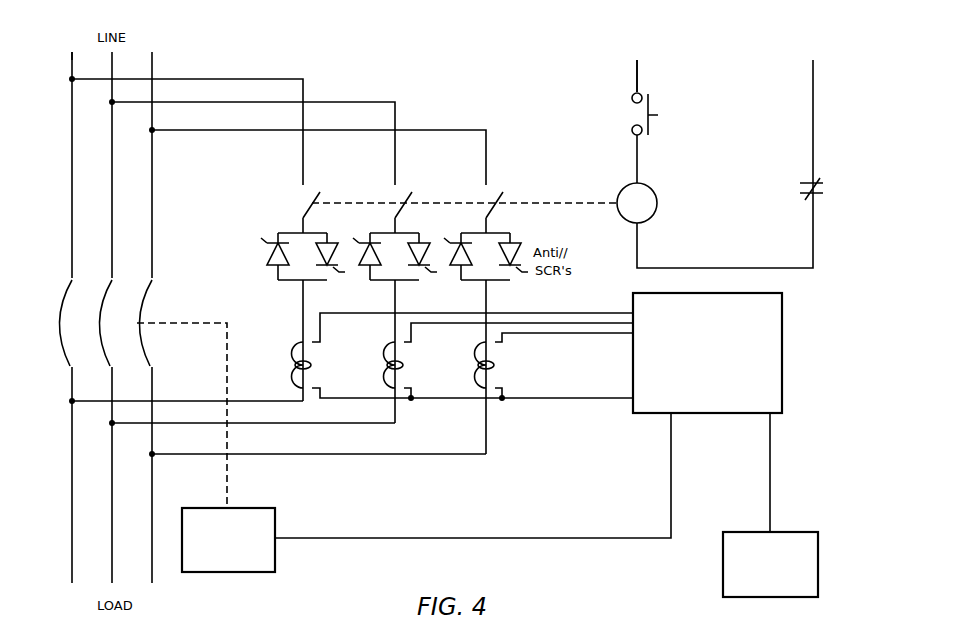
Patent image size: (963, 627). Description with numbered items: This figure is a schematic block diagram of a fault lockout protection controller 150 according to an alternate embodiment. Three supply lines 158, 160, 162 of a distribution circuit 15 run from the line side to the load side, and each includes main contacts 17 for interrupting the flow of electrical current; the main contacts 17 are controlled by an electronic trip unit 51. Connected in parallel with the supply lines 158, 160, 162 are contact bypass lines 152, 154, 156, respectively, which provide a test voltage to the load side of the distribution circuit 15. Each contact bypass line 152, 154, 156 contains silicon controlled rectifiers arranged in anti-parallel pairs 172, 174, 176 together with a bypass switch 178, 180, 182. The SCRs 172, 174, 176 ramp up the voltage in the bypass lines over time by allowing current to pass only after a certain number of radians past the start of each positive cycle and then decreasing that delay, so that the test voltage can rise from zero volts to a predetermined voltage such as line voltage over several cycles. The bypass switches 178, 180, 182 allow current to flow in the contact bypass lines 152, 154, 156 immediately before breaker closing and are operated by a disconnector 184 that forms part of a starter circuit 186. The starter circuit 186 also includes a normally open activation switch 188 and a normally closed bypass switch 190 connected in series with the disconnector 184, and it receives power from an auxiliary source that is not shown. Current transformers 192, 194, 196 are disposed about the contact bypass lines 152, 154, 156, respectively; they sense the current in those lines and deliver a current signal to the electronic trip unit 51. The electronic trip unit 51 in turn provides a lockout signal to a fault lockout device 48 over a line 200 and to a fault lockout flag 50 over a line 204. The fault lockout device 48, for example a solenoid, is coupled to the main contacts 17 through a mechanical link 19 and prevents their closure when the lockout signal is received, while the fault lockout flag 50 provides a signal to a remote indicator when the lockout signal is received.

The distribution circuit 15 is at (162, 30).
The main contacts 17 is at (57, 323).
The mechanical link 19 is at (227, 383).
The fault lockout device 48 is at (240, 507).
The fault lockout flag 50 is at (820, 562).
The electronic trip unit 51 is at (786, 340).
The fault lockout protection controller 150 is at (596, 62).
The contact bypass line 152 is at (233, 78).
The contact bypass line 154 is at (337, 100).
The contact bypass line 156 is at (203, 132).
The supply line 158 is at (72, 165).
The supply line 160 is at (112, 207).
The supply line 162 is at (152, 200).
The anti-parallel SCR pair 172 is at (278, 232).
The anti-parallel SCR pair 174 is at (370, 232).
The anti-parallel SCR pair 176 is at (461, 232).
The bypass switch 178 is at (300, 193).
The bypass switch 180 is at (392, 193).
The bypass switch 182 is at (484, 193).
The disconnector 184 is at (620, 190).
The starter circuit 186 is at (848, 103).
The normally open activation switch 188 is at (645, 90).
The normally closed bypass switch 190 is at (816, 200).
The current transformer 192 is at (292, 358).
The current transformer 194 is at (384, 358).
The current transformer 196 is at (475, 358).
The line 200 is at (440, 537).
The line 204 is at (771, 481).